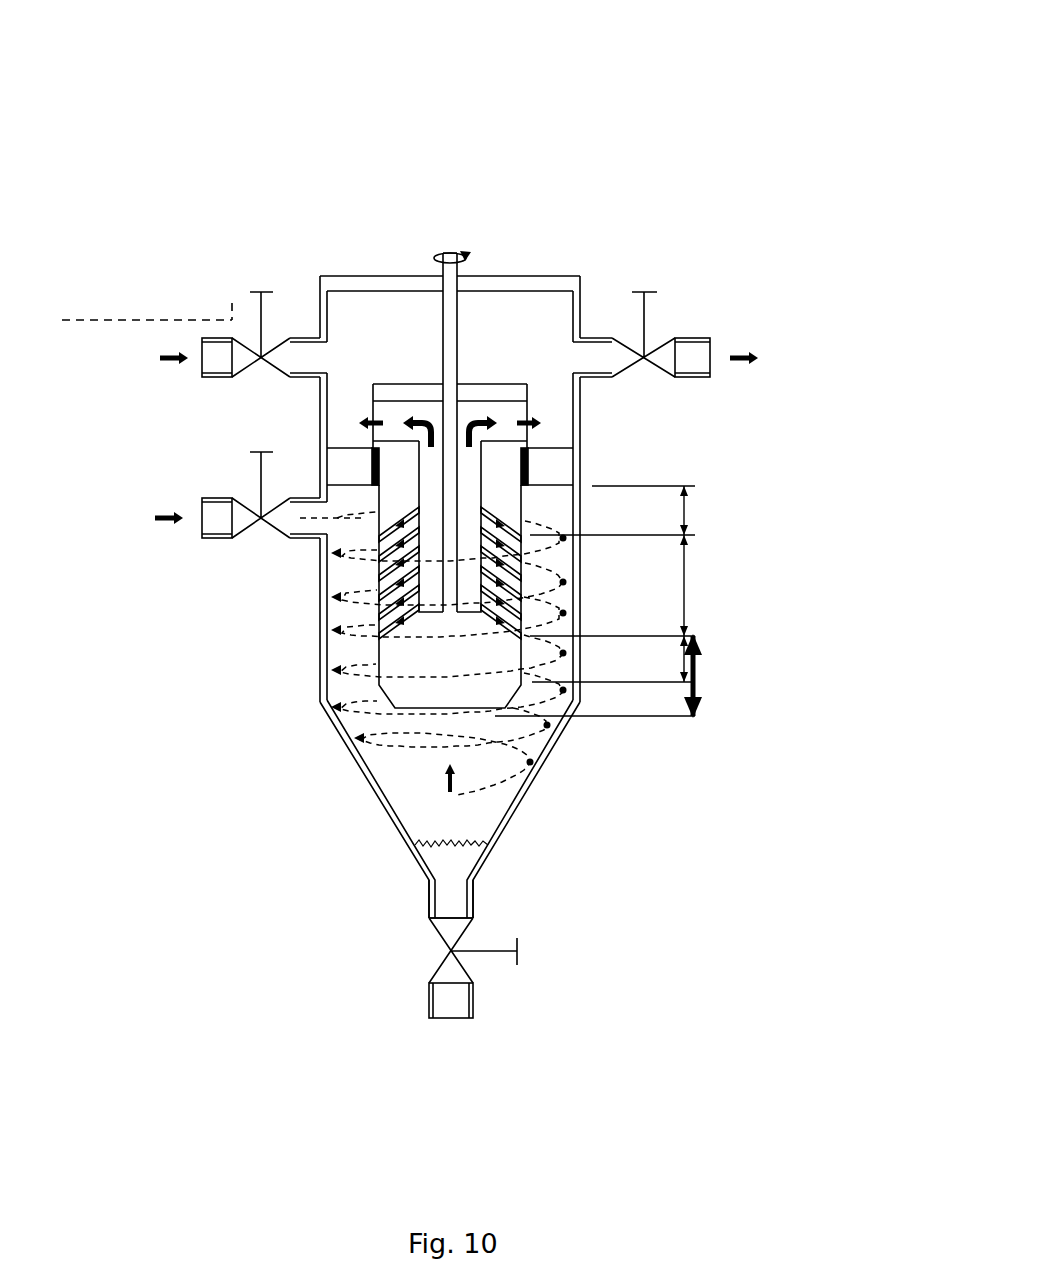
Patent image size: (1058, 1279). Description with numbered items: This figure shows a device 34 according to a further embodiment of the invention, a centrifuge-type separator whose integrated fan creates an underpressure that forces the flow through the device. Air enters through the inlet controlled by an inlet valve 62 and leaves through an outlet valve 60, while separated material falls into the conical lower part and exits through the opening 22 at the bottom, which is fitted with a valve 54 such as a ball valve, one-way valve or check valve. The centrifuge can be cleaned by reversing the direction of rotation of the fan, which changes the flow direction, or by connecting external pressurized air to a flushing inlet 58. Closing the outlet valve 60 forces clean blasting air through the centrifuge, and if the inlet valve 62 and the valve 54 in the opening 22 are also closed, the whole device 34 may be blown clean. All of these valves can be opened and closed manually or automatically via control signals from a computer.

The device 34 is at (444, 510).
The flushing inlet 58 is at (231, 297).
The outlet valve 60 is at (670, 297).
The inlet valve 62 is at (255, 541).
The outlet 22 is at (452, 893).
The valve 54 is at (540, 960).